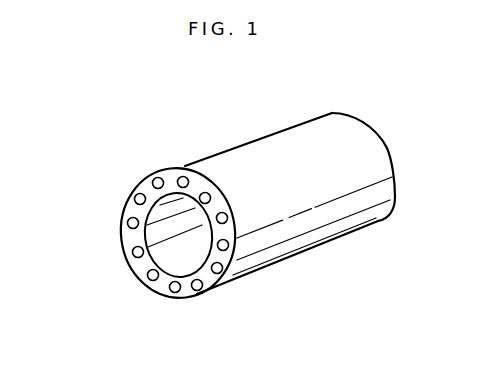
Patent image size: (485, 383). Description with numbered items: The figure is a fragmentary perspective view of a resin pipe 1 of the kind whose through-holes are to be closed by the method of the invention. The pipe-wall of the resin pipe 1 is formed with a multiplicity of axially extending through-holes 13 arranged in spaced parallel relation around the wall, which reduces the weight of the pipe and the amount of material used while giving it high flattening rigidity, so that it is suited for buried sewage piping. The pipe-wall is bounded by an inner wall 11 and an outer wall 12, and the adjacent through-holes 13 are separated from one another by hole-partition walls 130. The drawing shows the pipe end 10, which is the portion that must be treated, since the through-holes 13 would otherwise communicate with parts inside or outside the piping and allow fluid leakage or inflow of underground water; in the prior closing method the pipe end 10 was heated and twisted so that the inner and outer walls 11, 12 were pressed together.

The resin pipe 1 is at (250, 138).
The pipe end 10 is at (183, 297).
The inner wall 11 is at (153, 216).
The outer wall 12 is at (137, 187).
The through-holes 13 is at (133, 198).
The hole-partition walls 130 is at (141, 192).